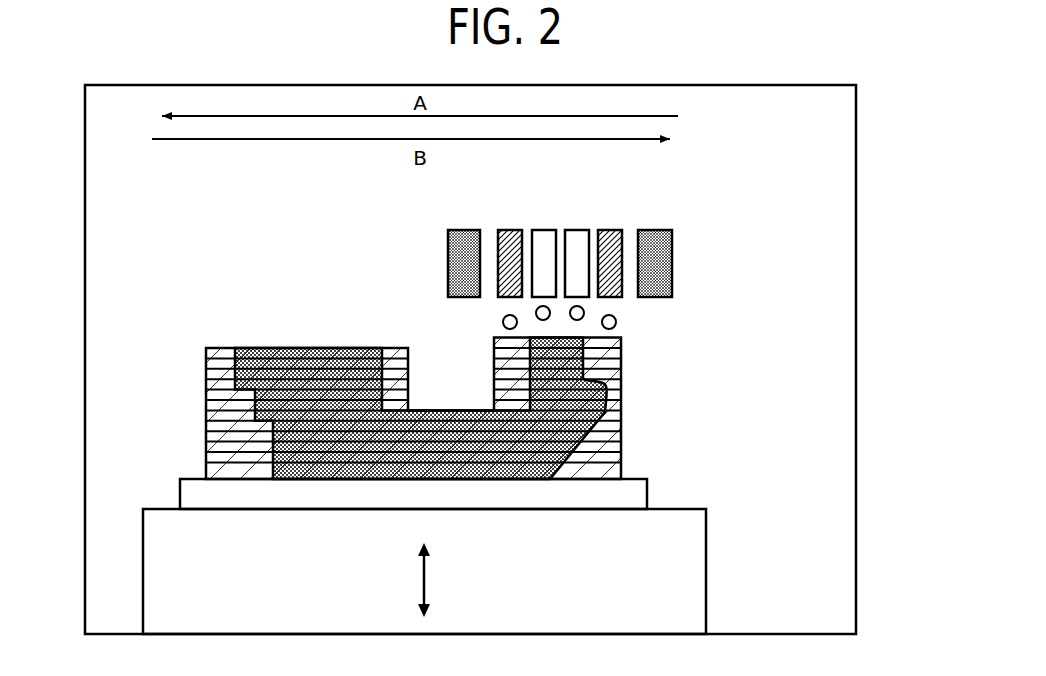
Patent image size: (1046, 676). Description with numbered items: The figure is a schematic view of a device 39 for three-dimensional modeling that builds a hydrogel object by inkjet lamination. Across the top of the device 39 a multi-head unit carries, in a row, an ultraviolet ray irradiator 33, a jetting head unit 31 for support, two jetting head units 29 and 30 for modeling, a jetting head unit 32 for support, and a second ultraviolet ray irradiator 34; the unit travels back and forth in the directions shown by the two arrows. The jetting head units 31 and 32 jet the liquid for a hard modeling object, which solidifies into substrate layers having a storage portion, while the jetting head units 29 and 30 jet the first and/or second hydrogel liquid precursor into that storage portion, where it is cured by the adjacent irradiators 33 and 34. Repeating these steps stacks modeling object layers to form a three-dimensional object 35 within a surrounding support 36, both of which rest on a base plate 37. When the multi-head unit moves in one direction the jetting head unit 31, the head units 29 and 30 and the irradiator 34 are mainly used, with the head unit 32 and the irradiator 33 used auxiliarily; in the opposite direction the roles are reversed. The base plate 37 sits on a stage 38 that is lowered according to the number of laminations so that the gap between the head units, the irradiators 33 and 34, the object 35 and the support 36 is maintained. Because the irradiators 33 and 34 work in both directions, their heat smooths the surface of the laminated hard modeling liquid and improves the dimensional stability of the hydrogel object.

The jetting head unit for 3D modeling 29 is at (542, 228).
The jetting head unit for 3D modeling 30 is at (575, 228).
The jetting head unit for support 31 is at (510, 228).
The jetting head unit for support 32 is at (608, 228).
The ultraviolet ray irradiator 33 is at (463, 228).
The ultraviolet ray irradiator 34 is at (653, 228).
The 3D object 35 is at (345, 342).
The support 36 is at (628, 375).
The 3D object base plate 37 is at (652, 497).
The stage 38 is at (712, 556).
The device for 3D modeling 39 is at (863, 483).